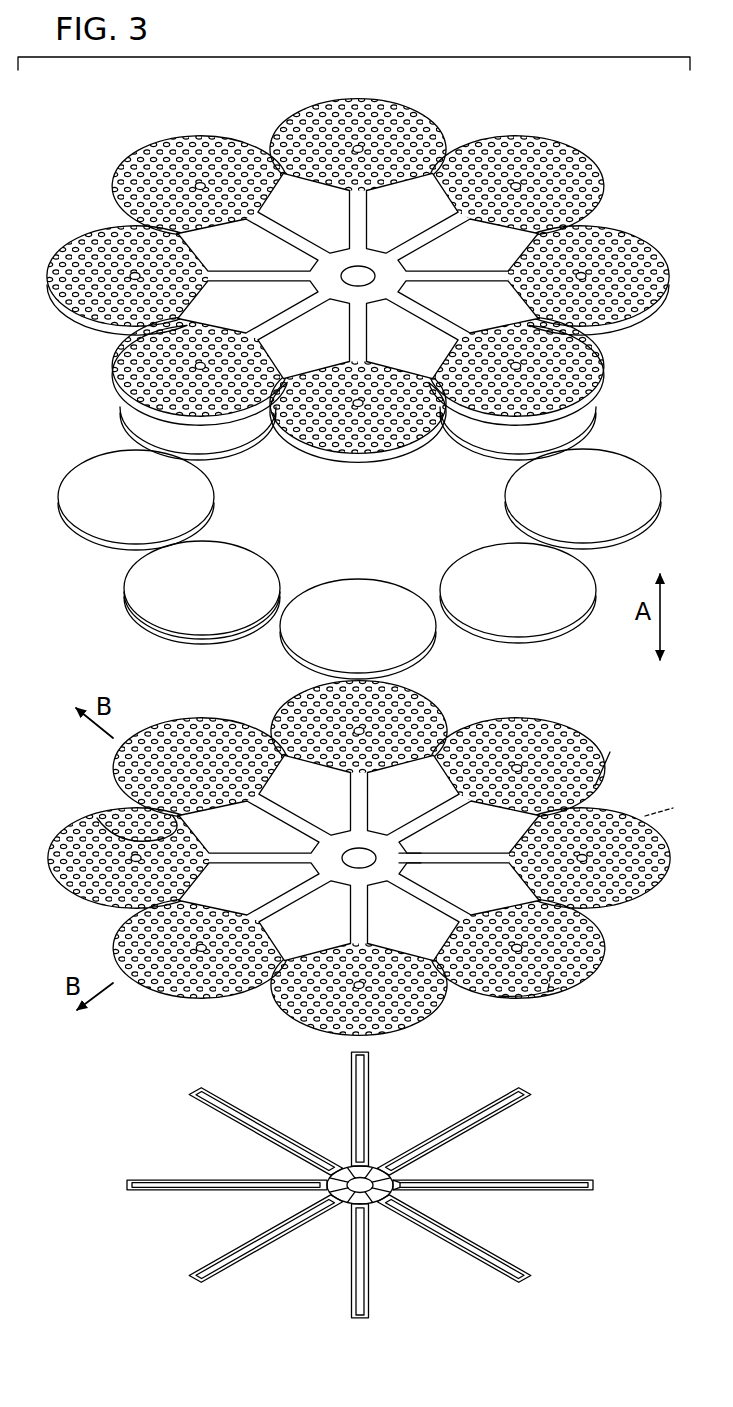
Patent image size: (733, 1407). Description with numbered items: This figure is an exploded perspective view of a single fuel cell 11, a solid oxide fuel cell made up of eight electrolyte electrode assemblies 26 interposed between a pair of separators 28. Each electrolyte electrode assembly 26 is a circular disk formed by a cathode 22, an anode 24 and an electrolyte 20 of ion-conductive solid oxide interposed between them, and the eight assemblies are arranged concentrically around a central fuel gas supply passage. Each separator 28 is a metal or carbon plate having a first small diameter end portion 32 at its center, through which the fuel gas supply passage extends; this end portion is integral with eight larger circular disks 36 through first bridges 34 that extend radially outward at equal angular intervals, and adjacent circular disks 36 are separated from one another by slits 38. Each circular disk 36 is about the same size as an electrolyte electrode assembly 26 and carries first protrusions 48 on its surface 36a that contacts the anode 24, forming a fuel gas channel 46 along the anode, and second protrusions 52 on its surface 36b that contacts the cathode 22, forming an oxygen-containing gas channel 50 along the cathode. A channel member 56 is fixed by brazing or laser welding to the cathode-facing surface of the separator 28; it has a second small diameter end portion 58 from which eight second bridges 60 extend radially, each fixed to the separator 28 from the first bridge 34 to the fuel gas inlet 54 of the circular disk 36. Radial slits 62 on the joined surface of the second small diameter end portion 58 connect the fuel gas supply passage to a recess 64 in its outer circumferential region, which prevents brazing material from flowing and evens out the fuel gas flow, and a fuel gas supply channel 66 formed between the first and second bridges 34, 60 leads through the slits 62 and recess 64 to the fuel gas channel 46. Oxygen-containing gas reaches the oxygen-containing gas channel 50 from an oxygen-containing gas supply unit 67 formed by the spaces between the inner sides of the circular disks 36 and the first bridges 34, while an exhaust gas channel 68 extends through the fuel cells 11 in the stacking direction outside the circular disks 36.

The fuel cell 11 is at (560, 101).
The electrolyte 20 is at (147, 611).
The cathode 22 is at (153, 584).
The anode 24 is at (156, 606).
The electrolyte electrode assembly 26 is at (195, 575).
The separator 28 is at (630, 130).
The first small diameter end portion 32 is at (403, 852).
The first bridge 34 is at (371, 798).
The circular disk 36 is at (418, 690).
The surface contacting the anode 36a is at (607, 950).
The surface contacting the cathode 36b is at (503, 1001).
The slit 38 is at (97, 818).
The fuel gas channel 46 is at (612, 858).
The first protrusion 48 is at (611, 812).
The oxygen-containing gas channel 50 is at (560, 990).
The second protrusion 52 is at (673, 840).
The fuel gas inlet 54 is at (518, 763).
The channel member 56 is at (360, 1178).
The second small diameter end portion 58 is at (380, 1150).
The second bridge 60 is at (510, 1180).
The slit 62 is at (405, 1180).
The recess 64 is at (343, 1206).
The fuel gas supply channel 66 is at (200, 1185).
The oxygen-containing gas supply unit 67 is at (305, 920).
The exhaust gas channel 68 is at (122, 991).